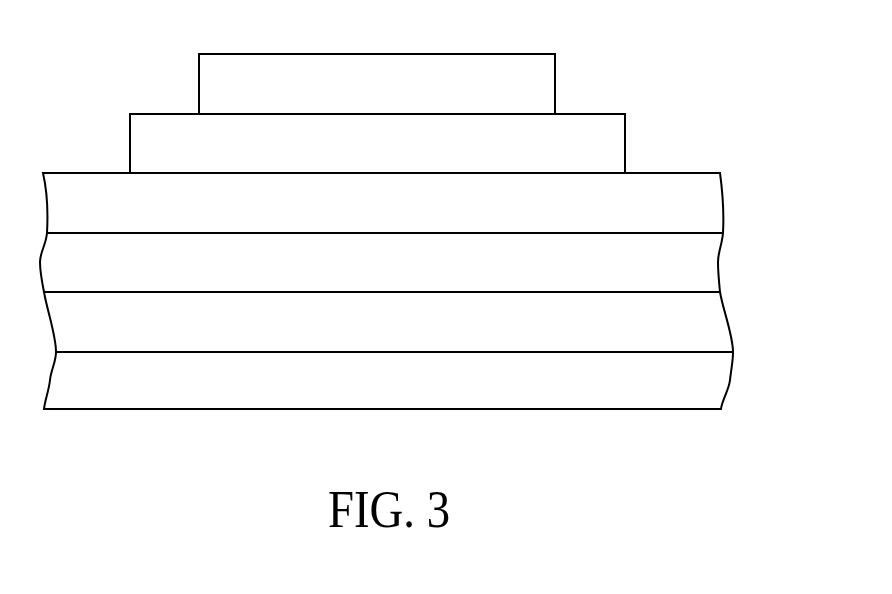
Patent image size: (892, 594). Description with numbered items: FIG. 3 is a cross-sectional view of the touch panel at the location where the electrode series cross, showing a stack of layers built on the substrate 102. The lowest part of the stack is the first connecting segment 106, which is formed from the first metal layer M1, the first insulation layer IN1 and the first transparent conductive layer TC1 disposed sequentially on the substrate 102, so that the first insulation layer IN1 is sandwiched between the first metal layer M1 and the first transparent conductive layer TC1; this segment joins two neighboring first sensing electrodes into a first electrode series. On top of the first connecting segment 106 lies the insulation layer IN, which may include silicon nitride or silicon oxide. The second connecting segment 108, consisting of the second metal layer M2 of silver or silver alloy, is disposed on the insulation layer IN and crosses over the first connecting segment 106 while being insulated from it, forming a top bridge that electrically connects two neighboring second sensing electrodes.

The substrate 102 is at (382, 393).
The first connecting segment 106 is at (424, 262).
The second connecting segment 108 is at (377, 84).
The first metal layer M1 is at (380, 334).
The first insulation layer IN1 is at (383, 275).
The first transparent conductive layer TC1 is at (385, 216).
The insulation layer IN is at (372, 153).
The second metal layer M2 is at (410, 94).